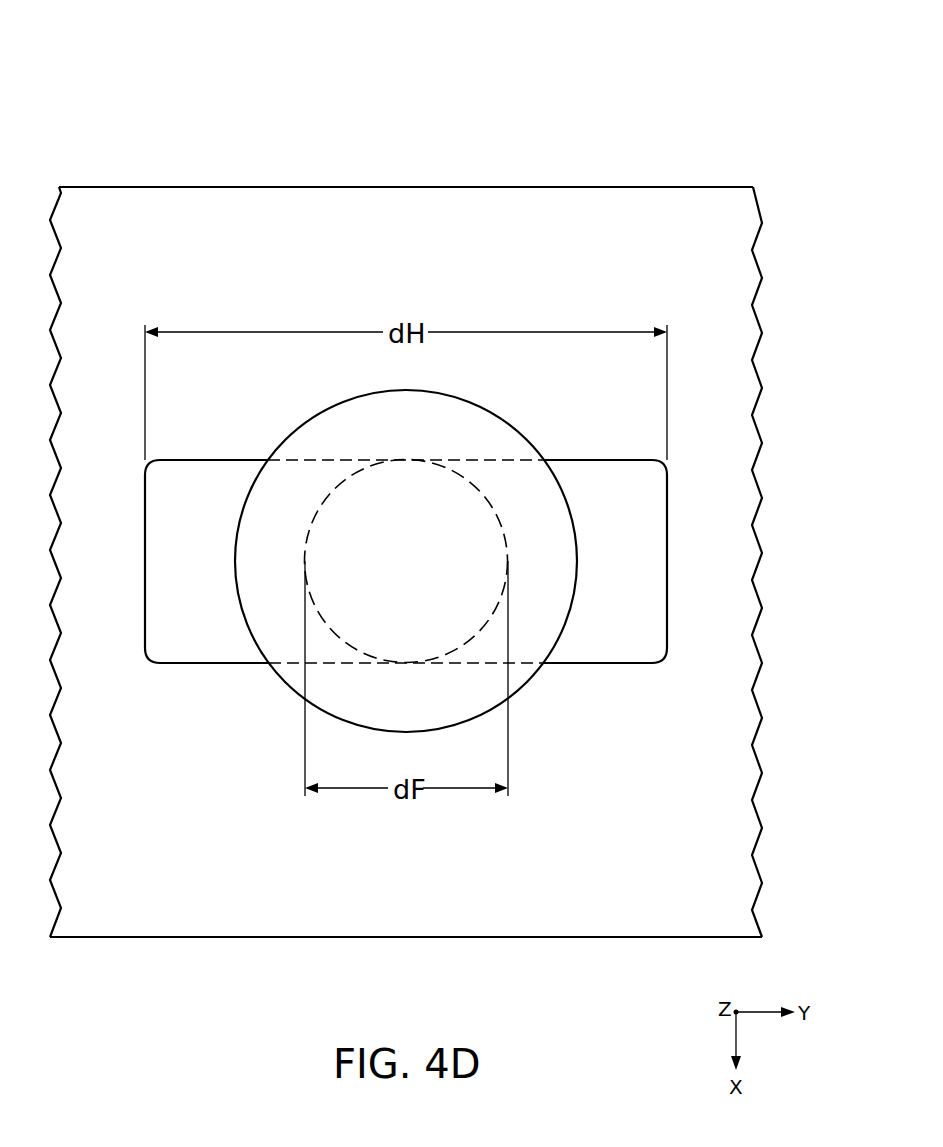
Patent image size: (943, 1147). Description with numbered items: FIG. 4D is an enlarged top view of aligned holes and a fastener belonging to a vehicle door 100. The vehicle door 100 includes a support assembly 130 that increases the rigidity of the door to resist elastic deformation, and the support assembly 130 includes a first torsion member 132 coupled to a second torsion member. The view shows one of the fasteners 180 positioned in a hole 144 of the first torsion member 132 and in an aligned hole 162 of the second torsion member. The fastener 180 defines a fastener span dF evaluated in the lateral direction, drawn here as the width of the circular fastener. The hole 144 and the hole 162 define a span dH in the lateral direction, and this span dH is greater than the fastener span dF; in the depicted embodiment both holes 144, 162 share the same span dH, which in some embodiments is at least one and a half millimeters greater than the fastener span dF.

The vehicle door 100 is at (78, 106).
The support assembly 130 is at (790, 212).
The first torsion member 132 is at (270, 194).
The hole 144 is at (168, 643).
The hole 162 is at (227, 655).
The fastener 180 is at (560, 612).